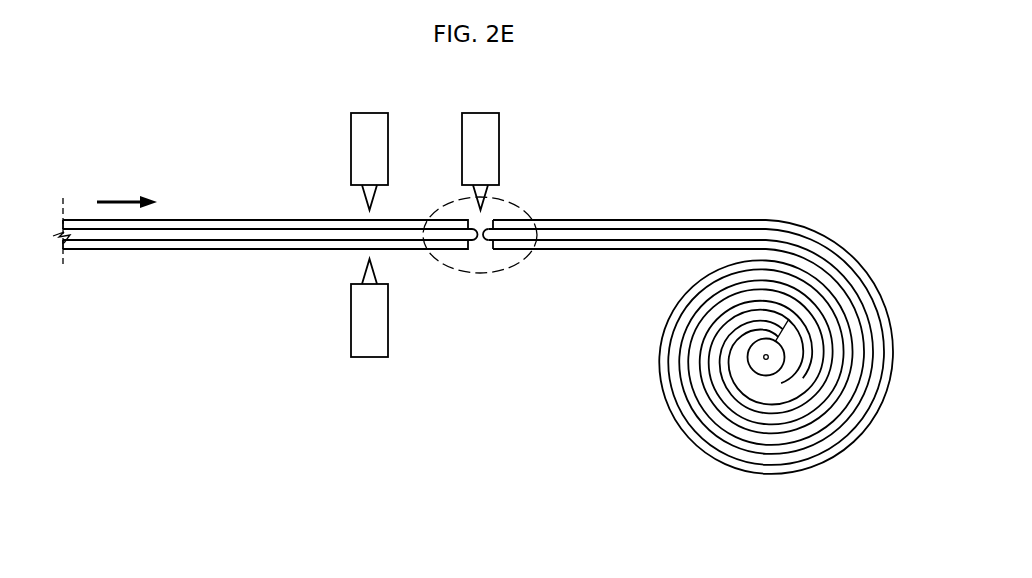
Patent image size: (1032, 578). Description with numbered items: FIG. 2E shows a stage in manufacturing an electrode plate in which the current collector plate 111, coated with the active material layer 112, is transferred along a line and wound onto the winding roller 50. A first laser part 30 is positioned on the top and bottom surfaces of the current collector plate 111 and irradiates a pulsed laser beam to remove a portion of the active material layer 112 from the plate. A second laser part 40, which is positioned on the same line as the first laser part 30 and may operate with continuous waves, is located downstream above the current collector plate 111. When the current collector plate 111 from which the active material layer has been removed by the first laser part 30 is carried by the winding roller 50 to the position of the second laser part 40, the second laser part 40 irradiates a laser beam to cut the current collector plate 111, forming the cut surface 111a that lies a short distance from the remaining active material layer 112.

The first laser part 30 is at (369, 113).
The second laser part 40 is at (481, 113).
The winding roller 50 is at (757, 357).
The current collector plate 111 is at (190, 235).
The active material layer 112 is at (291, 243).
The cut surface 111a is at (480, 236).